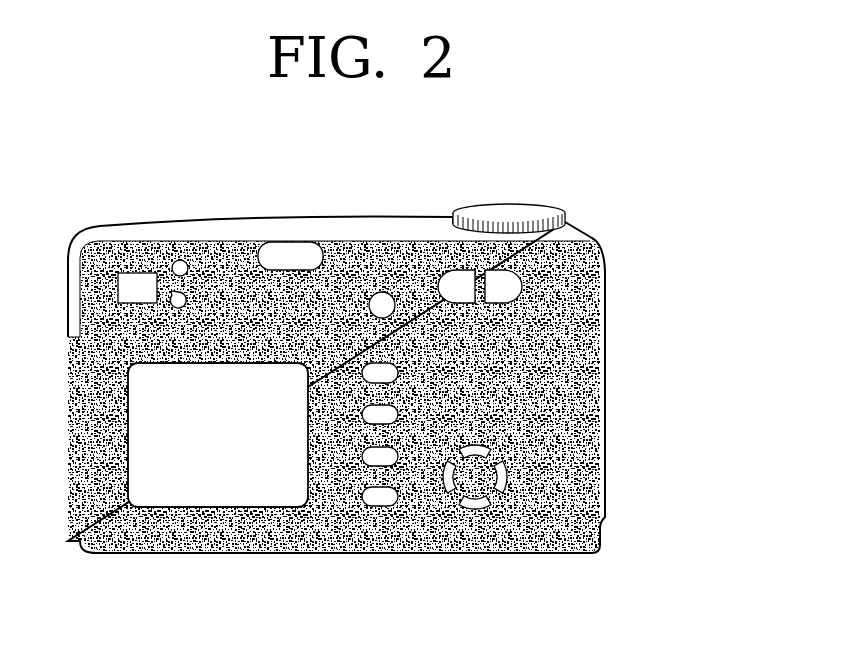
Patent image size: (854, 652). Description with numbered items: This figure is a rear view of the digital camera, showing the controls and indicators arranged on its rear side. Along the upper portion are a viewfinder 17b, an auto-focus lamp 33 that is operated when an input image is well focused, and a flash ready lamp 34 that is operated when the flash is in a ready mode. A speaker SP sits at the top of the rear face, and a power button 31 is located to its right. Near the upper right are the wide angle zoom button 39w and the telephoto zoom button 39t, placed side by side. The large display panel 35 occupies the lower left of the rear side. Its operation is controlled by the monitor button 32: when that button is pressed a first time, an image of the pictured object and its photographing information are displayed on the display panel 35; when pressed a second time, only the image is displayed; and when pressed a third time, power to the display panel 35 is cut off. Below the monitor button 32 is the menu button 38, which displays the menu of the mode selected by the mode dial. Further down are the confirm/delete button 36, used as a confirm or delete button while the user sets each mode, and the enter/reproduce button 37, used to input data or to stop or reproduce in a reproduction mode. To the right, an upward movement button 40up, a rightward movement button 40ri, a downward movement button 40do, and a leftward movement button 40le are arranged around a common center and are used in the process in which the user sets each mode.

The viewfinder 17b is at (135, 280).
The auto-focus lamp 33 is at (180, 262).
The flash ready lamp 34 is at (172, 302).
The speaker SP is at (290, 250).
The power button 31 is at (382, 300).
The wide angle zoom button 39w is at (453, 283).
The telephoto zoom button 39t is at (503, 282).
The monitor button 32 is at (393, 373).
The menu button 38 is at (393, 414).
The confirm/delete button 36 is at (370, 457).
The enter/reproduce button 37 is at (380, 497).
The display panel 35 is at (221, 488).
The upward movement button 40up is at (488, 448).
The rightward movement button 40ri is at (508, 475).
The downward movement button 40do is at (478, 507).
The leftward movement button 40le is at (447, 493).